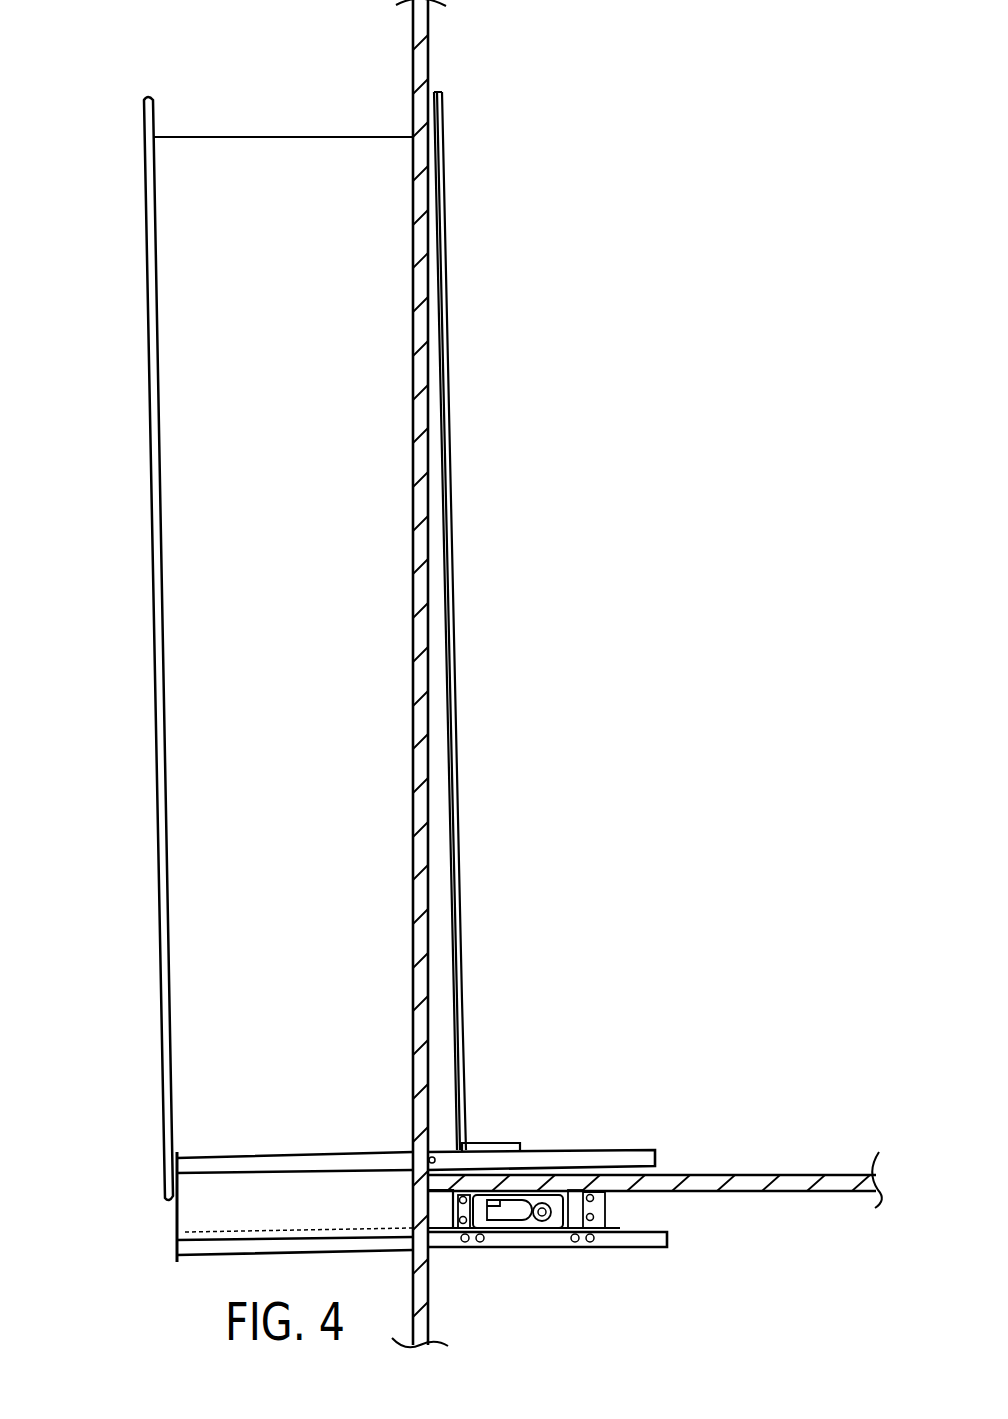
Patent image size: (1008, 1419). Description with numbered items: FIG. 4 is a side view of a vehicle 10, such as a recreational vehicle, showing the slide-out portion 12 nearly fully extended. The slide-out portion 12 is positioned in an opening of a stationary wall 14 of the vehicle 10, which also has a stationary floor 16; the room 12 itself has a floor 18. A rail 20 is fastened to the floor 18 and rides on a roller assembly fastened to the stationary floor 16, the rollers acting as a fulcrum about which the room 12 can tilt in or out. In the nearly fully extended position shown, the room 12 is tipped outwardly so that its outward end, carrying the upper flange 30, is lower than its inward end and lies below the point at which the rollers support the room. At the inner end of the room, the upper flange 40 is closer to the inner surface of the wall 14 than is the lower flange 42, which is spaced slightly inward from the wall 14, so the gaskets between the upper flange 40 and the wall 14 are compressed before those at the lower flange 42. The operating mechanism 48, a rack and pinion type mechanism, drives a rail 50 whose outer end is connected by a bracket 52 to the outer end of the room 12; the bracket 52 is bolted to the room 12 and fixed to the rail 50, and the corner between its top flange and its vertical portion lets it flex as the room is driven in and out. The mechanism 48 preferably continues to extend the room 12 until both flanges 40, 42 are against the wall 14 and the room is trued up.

The vehicle 10 is at (522, 282).
The slide-out portion 12 is at (306, 1030).
The stationary wall 14 is at (413, 33).
The stationary floor 16 is at (757, 1175).
The floor 18 is at (487, 1143).
The rail 20 is at (560, 1150).
The upper flange 30 is at (143, 122).
The upper flange 40 is at (443, 162).
The lower flange 42 is at (462, 1047).
The operating mechanism 48 is at (481, 1262).
The rail 50 is at (628, 1252).
The bracket 52 is at (177, 1213).